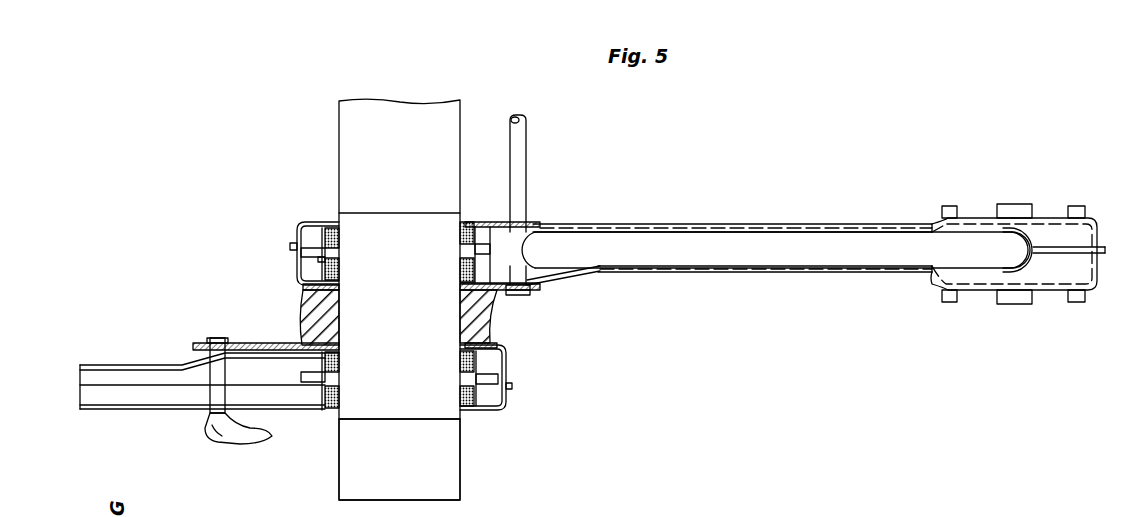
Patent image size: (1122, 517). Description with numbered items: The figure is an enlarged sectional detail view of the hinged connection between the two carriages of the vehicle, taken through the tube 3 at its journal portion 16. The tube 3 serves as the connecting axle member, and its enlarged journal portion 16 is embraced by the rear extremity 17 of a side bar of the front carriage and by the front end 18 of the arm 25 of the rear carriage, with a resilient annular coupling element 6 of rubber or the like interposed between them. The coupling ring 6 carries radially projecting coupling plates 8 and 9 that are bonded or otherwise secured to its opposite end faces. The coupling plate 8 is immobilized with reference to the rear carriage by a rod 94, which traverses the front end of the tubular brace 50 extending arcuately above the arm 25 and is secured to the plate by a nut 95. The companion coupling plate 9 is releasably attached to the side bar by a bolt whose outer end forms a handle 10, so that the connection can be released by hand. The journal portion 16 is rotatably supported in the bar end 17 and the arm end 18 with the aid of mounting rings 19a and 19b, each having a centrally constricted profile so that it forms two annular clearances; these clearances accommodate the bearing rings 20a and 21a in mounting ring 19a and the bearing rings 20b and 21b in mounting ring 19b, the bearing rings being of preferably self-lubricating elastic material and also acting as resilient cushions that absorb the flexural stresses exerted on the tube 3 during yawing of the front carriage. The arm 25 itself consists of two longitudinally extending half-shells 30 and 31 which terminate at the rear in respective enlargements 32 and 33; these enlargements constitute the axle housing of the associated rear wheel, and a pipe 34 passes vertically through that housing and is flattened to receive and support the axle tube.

The tube 3 is at (338, 488).
The resilient annular coupling element 6 is at (305, 311).
The coupling plate 8 is at (503, 292).
The coupling plate 9 is at (206, 341).
The handle 10 is at (226, 444).
The journal portion 16 is at (446, 416).
The rear extremity of side bar 17 is at (505, 406).
The front end of arm 18 is at (299, 224).
The mounting ring 19a is at (330, 386).
The mounting ring 19b is at (324, 256).
The bearing ring 20a is at (476, 410).
The bearing ring 20b is at (333, 222).
The bearing ring 21a is at (323, 364).
The bearing ring 21b is at (323, 270).
The arm 25 is at (556, 276).
The half-shell 30 is at (712, 225).
The half-shell 31 is at (712, 273).
The enlargement 32 is at (1091, 216).
The enlargement 33 is at (1091, 292).
The pipe 34 is at (1022, 220).
The tubular brace 50 is at (654, 265).
The rod 94 is at (527, 138).
The nut 95 is at (520, 296).